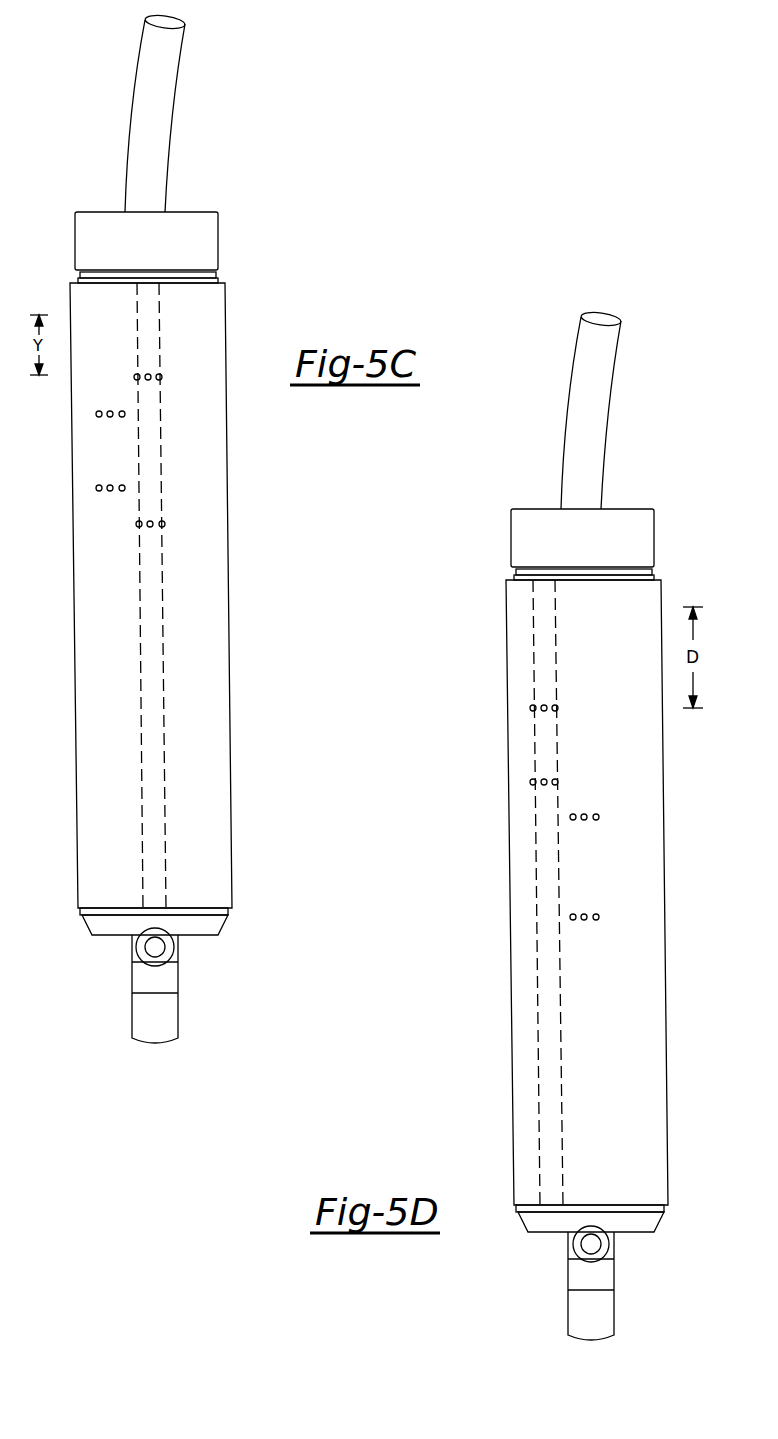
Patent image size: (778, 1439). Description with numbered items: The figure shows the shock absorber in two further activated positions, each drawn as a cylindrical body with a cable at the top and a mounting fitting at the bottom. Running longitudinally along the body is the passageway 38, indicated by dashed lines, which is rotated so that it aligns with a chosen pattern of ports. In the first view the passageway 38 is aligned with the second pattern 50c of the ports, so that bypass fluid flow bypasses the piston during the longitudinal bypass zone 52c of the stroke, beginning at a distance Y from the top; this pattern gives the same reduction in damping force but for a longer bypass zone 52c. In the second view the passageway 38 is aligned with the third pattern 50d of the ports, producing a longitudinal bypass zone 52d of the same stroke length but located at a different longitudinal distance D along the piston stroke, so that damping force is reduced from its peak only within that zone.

In FIG. 5C, the passageway 38 is at (150, 334).
In FIG. 5D, the passageway 38 is at (545, 611).
In FIG. 5C, the second pattern of the ports 50c is at (177, 367).
In FIG. 5C, the longitudinal bypass zone 52c is at (181, 441).
In FIG. 5D, the third pattern of the ports 50d is at (545, 711).
In FIG. 5D, the longitudinal bypass zone 52d is at (541, 745).